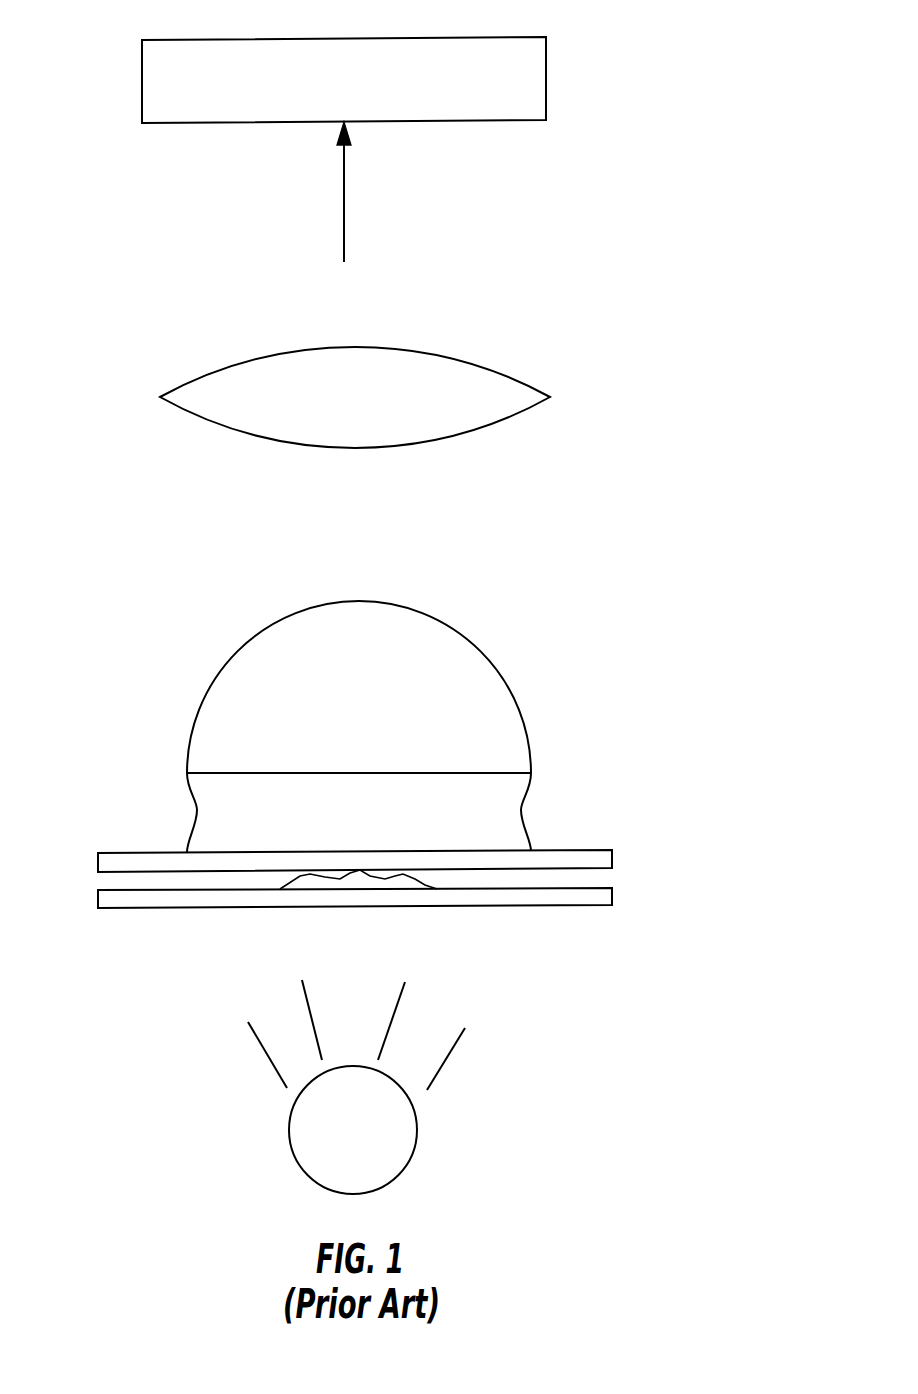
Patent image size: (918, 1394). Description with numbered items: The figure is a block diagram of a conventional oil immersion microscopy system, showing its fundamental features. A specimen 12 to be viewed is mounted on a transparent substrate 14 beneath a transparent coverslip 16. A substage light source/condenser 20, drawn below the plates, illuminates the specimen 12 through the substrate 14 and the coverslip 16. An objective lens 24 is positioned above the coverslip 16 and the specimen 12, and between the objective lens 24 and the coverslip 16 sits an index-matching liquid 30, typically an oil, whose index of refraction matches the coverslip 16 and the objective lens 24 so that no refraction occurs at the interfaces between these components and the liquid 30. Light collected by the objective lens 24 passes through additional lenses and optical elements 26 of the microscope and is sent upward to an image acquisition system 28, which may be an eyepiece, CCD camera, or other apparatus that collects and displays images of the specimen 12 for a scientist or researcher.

The specimen 12 is at (358, 883).
The transparent substrate 14 is at (115, 902).
The transparent coverslip 16 is at (113, 858).
The substage light source/condenser 20 is at (528, 1062).
The objective lens 24 is at (460, 640).
The additional lenses and optical elements 26 is at (435, 360).
The image acquisition system 28 is at (497, 37).
The index-matching liquid 30 is at (510, 823).